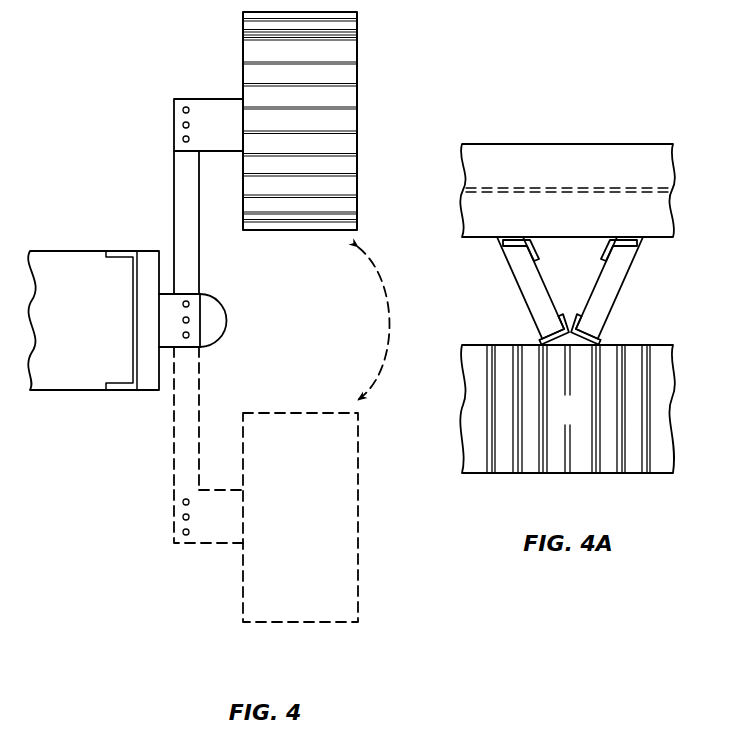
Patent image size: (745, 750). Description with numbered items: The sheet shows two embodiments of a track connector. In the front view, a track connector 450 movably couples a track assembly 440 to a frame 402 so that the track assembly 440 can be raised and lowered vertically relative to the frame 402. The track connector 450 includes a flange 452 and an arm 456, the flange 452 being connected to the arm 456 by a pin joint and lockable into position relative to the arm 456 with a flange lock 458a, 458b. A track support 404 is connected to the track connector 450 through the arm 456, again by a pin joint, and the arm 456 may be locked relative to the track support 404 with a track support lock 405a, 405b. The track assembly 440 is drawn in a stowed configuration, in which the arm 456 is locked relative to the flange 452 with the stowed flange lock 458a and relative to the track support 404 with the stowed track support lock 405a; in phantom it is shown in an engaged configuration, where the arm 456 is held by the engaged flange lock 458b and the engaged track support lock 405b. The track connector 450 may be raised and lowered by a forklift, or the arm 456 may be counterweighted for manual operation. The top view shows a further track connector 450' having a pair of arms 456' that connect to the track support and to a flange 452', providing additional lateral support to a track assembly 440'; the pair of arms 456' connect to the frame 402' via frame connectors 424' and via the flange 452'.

In FIG. 4, the frame 402 is at (93, 355).
In FIG. 4, the track support 404 is at (166, 404).
In FIG. 4, the stowed track support lock 405a is at (190, 304).
In FIG. 4, the engaged track support lock 405b is at (190, 335).
In FIG. 4, the track assembly 440 is at (341, 121).
In FIG. 4, the track connector 450 is at (180, 202).
In FIG. 4, the flange 452 is at (168, 102).
In FIG. 4, the arm 456 is at (232, 222).
In FIG. 4, the stowed flange lock 458a is at (183, 108).
In FIG. 4, the engaged flange lock 458b is at (183, 140).
In FIG. 4A, the frame 402' is at (567, 190).
In FIG. 4A, the track assembly 440' is at (567, 409).
In FIG. 4A, the frame connectors 424' is at (568, 258).
In FIG. 4A, the track connector 450' is at (568, 291).
In FIG. 4A, the flange 452' is at (532, 329).
In FIG. 4A, the pair of arms 456' is at (553, 288).